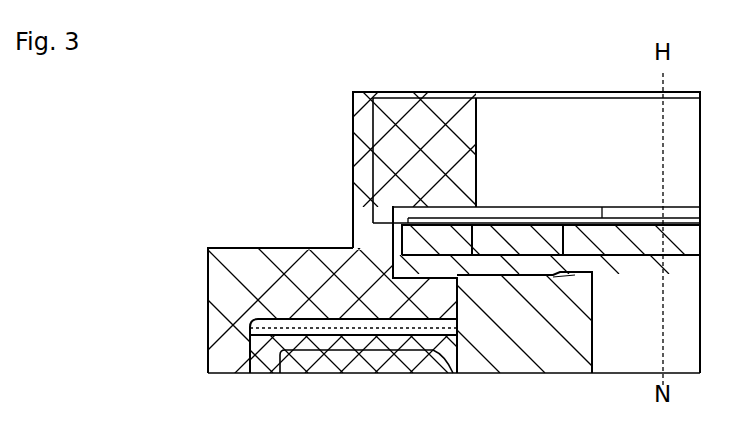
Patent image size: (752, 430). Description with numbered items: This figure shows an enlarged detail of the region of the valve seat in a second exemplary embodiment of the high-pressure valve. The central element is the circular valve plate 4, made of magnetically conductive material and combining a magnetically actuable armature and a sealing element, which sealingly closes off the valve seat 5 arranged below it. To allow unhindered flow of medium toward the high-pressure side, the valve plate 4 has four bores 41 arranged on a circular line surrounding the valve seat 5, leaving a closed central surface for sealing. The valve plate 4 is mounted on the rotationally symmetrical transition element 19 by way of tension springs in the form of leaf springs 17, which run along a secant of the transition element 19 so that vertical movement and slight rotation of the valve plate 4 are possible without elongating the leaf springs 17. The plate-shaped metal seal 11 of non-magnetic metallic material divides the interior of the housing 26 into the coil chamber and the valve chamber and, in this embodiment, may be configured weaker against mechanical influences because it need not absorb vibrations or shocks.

The transition element 19 is at (403, 135).
The leaf springs 17 is at (480, 208).
The bores 41 is at (537, 207).
The valve plate 4 is at (615, 212).
The valve seat 5 is at (575, 272).
The metal seal 11 is at (427, 302).
The housing 26 is at (283, 315).